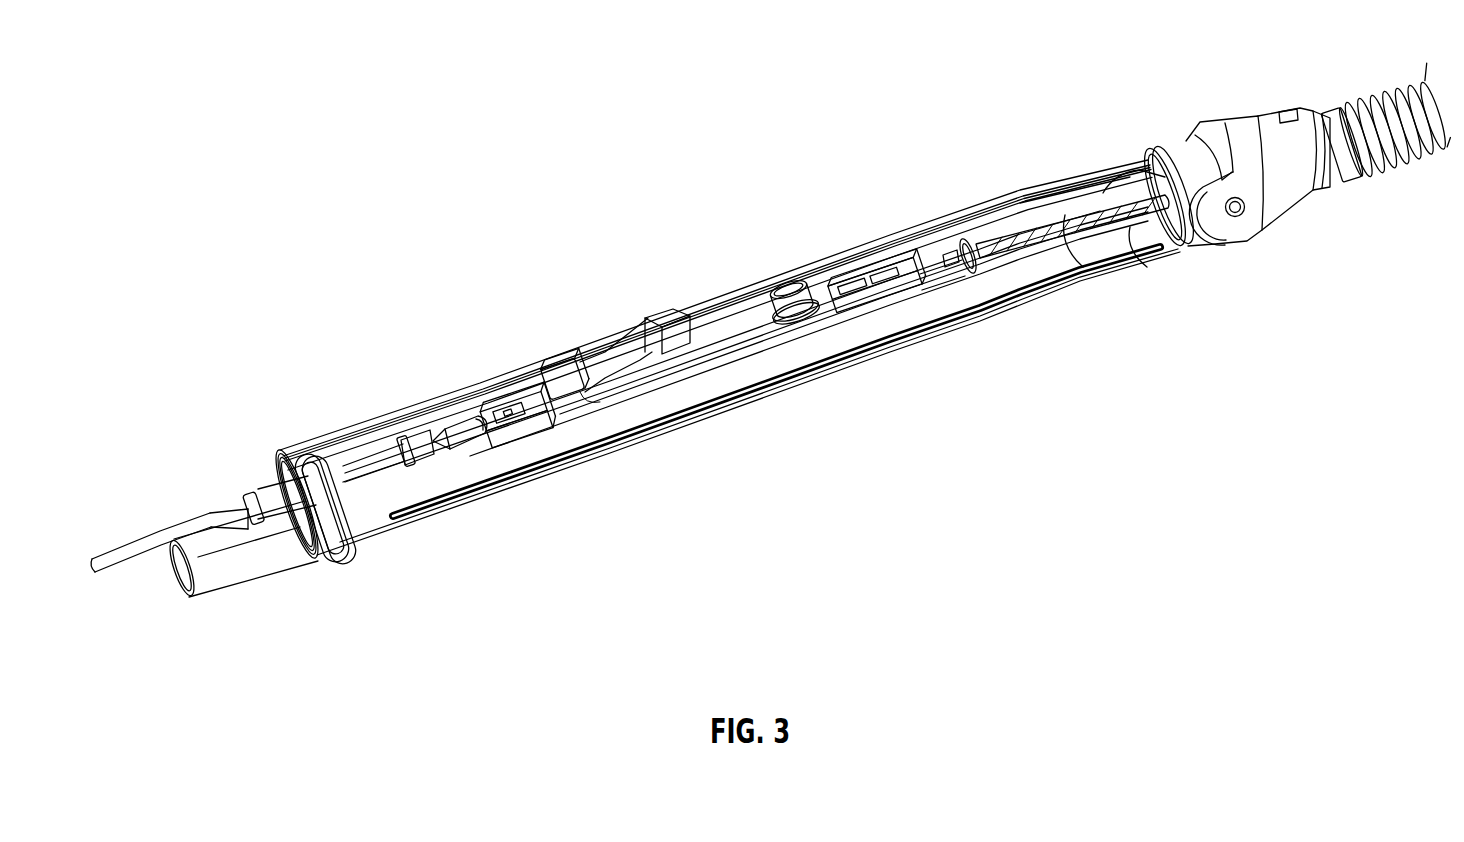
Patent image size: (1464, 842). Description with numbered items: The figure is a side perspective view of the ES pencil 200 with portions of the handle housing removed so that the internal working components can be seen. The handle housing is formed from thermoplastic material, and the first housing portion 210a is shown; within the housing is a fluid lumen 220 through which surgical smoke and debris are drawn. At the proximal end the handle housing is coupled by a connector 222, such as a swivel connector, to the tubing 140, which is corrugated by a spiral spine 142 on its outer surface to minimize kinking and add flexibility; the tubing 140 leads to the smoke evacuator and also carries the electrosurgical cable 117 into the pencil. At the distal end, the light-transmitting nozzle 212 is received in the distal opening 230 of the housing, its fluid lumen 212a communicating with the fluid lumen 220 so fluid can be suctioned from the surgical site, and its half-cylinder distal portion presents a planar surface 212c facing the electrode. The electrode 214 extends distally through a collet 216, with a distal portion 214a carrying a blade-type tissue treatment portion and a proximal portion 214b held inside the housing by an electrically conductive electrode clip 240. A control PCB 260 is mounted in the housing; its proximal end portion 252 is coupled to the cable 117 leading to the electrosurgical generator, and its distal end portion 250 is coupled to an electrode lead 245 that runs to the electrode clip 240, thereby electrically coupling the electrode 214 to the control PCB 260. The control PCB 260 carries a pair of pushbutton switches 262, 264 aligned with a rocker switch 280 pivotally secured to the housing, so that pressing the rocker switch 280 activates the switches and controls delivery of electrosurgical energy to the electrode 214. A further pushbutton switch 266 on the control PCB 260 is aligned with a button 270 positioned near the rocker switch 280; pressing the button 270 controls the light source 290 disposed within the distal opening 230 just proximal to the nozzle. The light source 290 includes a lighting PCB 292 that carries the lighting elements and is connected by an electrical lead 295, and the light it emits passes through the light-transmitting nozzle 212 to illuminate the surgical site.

The ES pencil 200 is at (415, 130).
The electrosurgical cable 117 is at (1070, 223).
The tubing 140 is at (1375, 88).
The spiral spine 142 is at (1393, 170).
The first housing portion 210a is at (935, 219).
The light-transmitting nozzle 212 is at (281, 553).
The fluid lumen 212a is at (175, 567).
The planar surface 212c is at (203, 556).
The electrode 214 is at (170, 516).
The distal portion 214a is at (127, 553).
The proximal portion 214b is at (373, 450).
The collet 216 is at (262, 495).
The fluid lumen 220 is at (745, 377).
The connector 222 is at (1168, 124).
The distal opening 230 is at (255, 468).
The electrode clip 240 is at (433, 433).
The electrode lead 245 is at (468, 452).
The distal end portion 250 is at (527, 443).
The proximal end portion 252 is at (957, 282).
The control PCB 260 is at (725, 337).
The pushbutton switch 262 is at (570, 400).
The pushbutton switch 264 is at (683, 362).
The pushbutton switch 266 is at (800, 322).
The button 270 is at (787, 285).
The rocker switch 280 is at (640, 337).
The light source 290 is at (340, 567).
The lighting PCB 292 is at (350, 503).
The electrical lead 295 is at (480, 427).